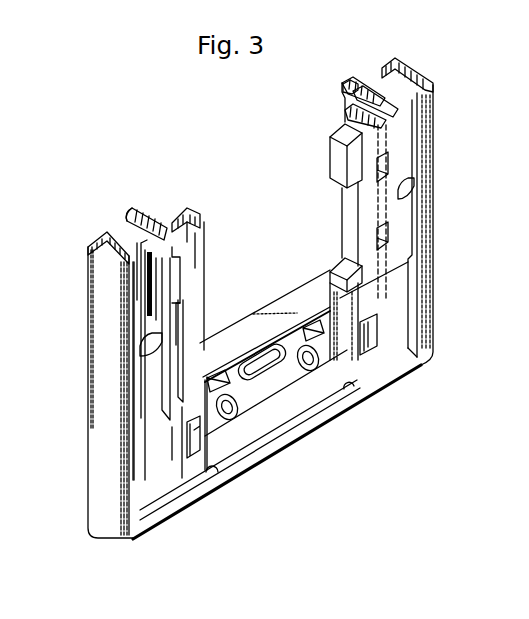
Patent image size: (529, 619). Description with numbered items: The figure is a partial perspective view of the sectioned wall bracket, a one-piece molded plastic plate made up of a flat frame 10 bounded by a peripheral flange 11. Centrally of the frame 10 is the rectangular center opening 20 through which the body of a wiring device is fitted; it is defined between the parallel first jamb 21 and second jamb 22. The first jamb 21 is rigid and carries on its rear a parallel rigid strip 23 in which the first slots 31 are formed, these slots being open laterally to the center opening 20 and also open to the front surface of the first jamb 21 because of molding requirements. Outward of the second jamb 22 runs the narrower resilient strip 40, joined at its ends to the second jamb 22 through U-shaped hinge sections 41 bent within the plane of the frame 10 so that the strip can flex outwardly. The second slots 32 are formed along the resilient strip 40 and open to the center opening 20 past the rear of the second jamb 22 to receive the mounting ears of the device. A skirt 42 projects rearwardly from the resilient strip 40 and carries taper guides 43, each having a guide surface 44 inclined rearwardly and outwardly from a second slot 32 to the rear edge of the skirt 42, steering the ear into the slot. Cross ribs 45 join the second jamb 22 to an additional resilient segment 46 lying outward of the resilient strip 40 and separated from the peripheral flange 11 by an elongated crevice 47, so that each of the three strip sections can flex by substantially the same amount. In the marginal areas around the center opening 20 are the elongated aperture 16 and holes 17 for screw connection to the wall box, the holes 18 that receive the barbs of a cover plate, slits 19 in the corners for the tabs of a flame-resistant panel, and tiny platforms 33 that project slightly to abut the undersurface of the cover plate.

The frame 10 is at (85, 538).
The peripheral flange 11 is at (103, 367).
The elongated aperture 16 is at (262, 362).
The holes 17 is at (227, 412).
The holes 18 is at (375, 337).
The slits 19 is at (413, 285).
The center opening 20 is at (273, 293).
The first jamb 21 is at (365, 205).
The second jamb 22 is at (195, 248).
The rigid strip 23 is at (365, 80).
The first slots 31 is at (353, 98).
The second slots 32 is at (157, 213).
The platforms 33 is at (412, 188).
The resilient strip 40 is at (172, 303).
The U-shaped hinge sections 41 is at (180, 410).
The skirt 42 is at (143, 228).
The taper guides 43 is at (145, 222).
The guide surface 44 is at (145, 203).
The cross ribs 45 is at (172, 268).
The additional resilient segment 46 is at (150, 308).
The elongated crevice 47 is at (168, 295).